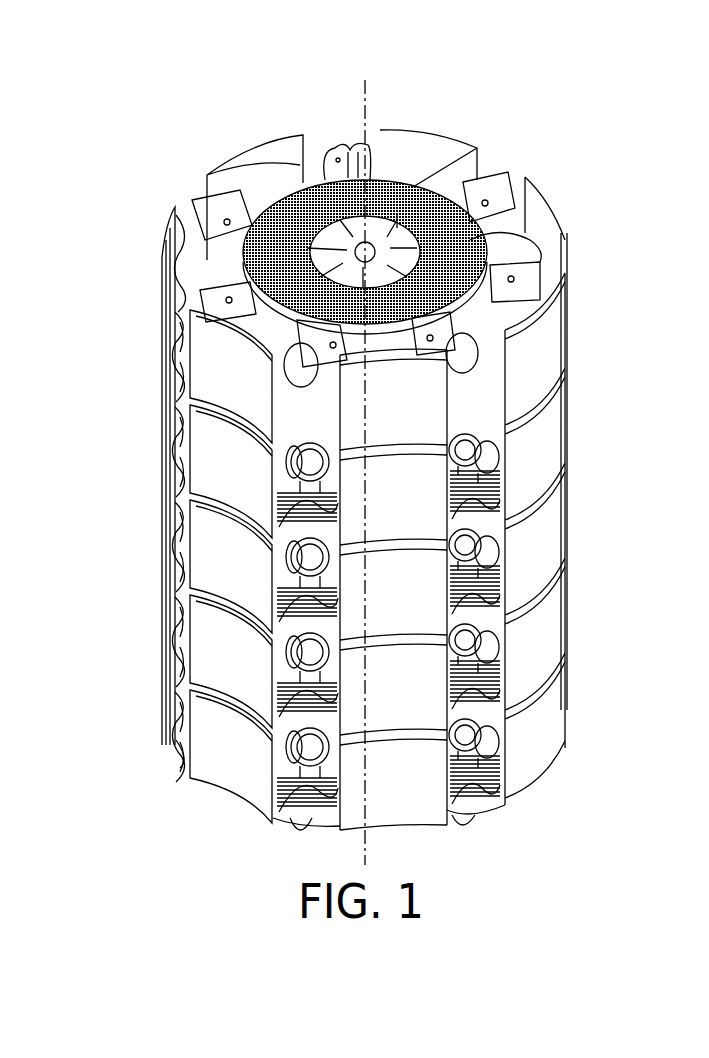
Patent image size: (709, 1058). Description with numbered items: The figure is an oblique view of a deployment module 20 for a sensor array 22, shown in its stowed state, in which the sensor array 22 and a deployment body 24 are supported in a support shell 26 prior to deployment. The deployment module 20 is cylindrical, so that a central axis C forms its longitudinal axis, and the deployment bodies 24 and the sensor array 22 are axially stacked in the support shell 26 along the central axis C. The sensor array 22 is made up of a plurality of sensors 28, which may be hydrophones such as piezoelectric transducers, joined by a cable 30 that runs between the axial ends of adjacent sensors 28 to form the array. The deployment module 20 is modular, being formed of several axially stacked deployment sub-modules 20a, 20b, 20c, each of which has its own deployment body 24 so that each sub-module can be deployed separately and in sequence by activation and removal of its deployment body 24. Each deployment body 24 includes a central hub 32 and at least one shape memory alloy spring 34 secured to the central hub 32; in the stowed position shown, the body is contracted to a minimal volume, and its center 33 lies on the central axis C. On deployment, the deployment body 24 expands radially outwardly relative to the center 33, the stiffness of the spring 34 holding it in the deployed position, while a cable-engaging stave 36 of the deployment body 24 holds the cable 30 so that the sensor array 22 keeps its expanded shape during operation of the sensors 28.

The deployment module 20 is at (158, 160).
The deployment sub-module 20a is at (200, 357).
The deployment sub-module 20b is at (200, 457).
The deployment sub-module 20c is at (200, 747).
The sensor array 22 is at (172, 258).
The deployment body 24 is at (522, 207).
The support shell 26 is at (538, 320).
The sensor 28 is at (532, 250).
The cable 30 is at (521, 427).
The central hub 32 is at (477, 145).
The center 33 is at (297, 213).
The spring 34 is at (297, 188).
The stave 36 is at (222, 292).
The central axis C is at (383, 88).